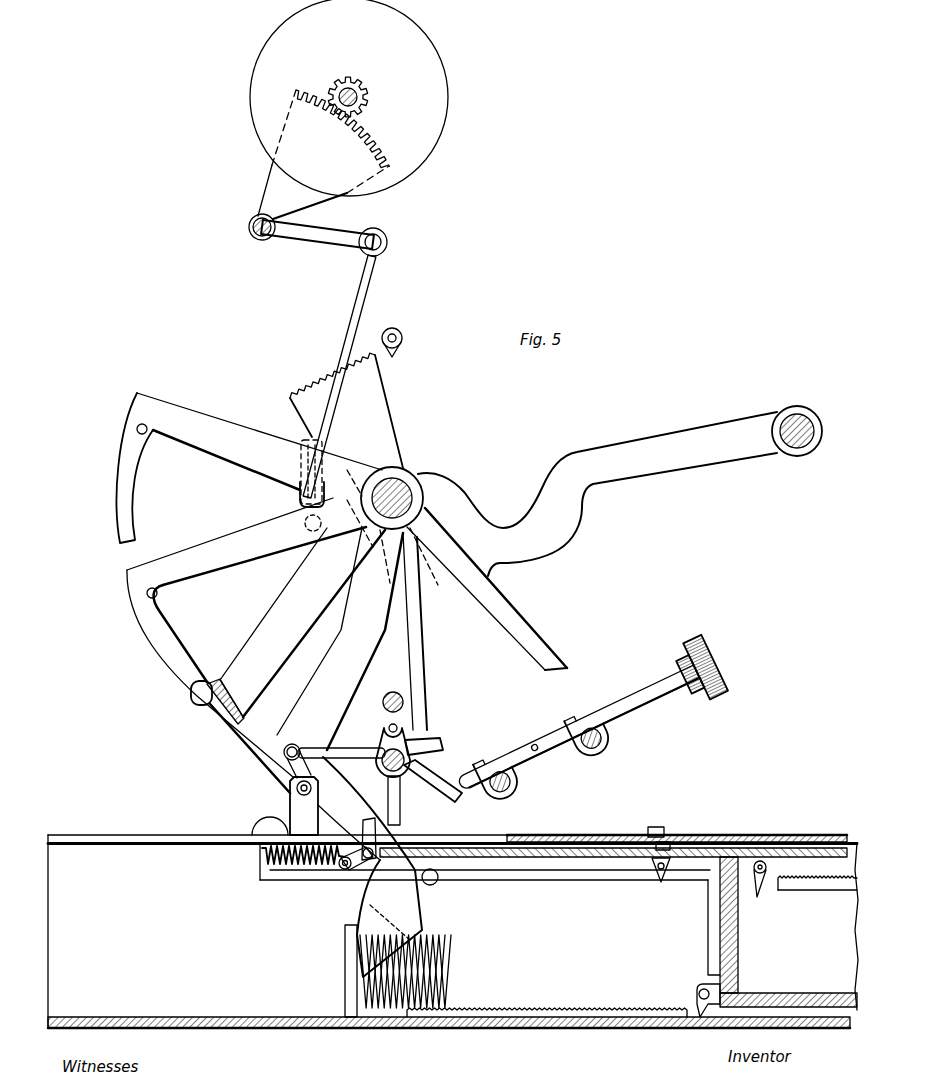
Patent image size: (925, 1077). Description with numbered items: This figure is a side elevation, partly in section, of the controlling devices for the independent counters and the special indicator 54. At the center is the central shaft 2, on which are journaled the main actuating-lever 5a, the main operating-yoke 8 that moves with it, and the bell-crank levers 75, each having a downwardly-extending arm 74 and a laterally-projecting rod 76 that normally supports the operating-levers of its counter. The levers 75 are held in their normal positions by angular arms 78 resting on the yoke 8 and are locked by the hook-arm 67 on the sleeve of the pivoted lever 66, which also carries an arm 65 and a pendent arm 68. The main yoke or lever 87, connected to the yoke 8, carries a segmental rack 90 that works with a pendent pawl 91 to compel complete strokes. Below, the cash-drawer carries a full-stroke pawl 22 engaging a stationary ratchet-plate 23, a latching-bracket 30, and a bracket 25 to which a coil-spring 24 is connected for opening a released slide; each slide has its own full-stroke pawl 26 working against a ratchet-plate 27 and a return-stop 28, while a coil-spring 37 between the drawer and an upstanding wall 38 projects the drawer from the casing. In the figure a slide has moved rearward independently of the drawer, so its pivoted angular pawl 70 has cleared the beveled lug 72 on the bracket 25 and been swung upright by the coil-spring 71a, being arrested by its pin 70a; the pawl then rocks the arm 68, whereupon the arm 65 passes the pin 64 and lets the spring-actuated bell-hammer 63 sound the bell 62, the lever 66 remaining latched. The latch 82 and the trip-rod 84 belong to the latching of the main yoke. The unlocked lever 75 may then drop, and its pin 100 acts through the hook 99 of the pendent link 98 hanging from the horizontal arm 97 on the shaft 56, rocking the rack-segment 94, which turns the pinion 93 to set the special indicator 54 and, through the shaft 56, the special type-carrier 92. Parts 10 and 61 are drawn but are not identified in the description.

The central shaft 2 is at (396, 488).
The main actuating-lever 5a is at (349, 752).
The main operating-yoke 8 is at (296, 626).
The frame casing 10 is at (762, 953).
The pendent full-stroke pawl 22 is at (703, 1020).
The stationary ratchet-plate 23 is at (515, 1008).
The coil-spring 24 is at (285, 880).
The bracket 25 is at (258, 877).
The pendent full-stroke pawl 26 is at (759, 890).
The stationary ratchet-plate 27 is at (830, 886).
The return-stop 28 is at (332, 870).
The latching-bracket 30 is at (433, 886).
The coil-spring 37 is at (447, 960).
The wall 38 is at (344, 968).
The special indicator 54 is at (349, 98).
The transverse rod 56 is at (249, 232).
The adjusting bar 61 is at (582, 737).
The bell 62 is at (255, 826).
The spring-actuated bell-hammer 63 is at (320, 812).
The laterally-projecting pin 64 is at (286, 753).
The arm 65 is at (386, 730).
The pivoted lever 66 is at (412, 735).
The hook-arm 67 is at (443, 746).
The pendent arm 68 is at (401, 808).
The pivoted angular pawl 70 is at (342, 826).
The laterally-projecting pin 70a is at (666, 880).
The coil-spring 71a is at (355, 880).
The beveled lug 72 is at (658, 862).
The downwardly-extending arm 74 is at (545, 652).
The bell-crank lever 75 is at (254, 489).
The laterally-projecting rod 76 is at (146, 435).
The angular arm 78 is at (116, 492).
The latch 82 is at (405, 780).
The trip-rod 84 is at (389, 727).
The main operating yoke or lever 87 is at (620, 491).
The segmental rack 90 is at (346, 410).
The pendent pawl 91 is at (402, 344).
The special type-carrier 92 is at (708, 660).
The pinion 93 is at (368, 90).
The pivoted rack-segment 94 is at (323, 154).
The horizontal arm 97 is at (316, 236).
The pendent link 98 is at (374, 302).
The hook 99 is at (304, 447).
The pin 100 is at (311, 532).